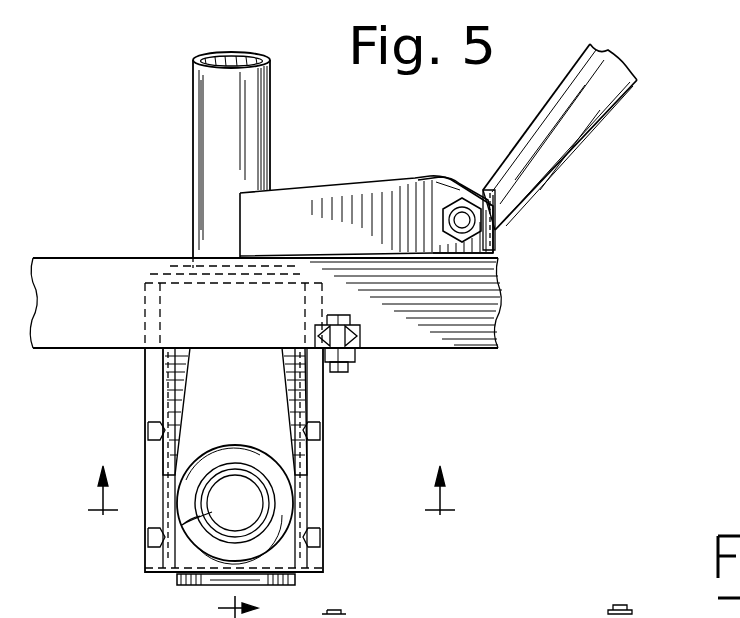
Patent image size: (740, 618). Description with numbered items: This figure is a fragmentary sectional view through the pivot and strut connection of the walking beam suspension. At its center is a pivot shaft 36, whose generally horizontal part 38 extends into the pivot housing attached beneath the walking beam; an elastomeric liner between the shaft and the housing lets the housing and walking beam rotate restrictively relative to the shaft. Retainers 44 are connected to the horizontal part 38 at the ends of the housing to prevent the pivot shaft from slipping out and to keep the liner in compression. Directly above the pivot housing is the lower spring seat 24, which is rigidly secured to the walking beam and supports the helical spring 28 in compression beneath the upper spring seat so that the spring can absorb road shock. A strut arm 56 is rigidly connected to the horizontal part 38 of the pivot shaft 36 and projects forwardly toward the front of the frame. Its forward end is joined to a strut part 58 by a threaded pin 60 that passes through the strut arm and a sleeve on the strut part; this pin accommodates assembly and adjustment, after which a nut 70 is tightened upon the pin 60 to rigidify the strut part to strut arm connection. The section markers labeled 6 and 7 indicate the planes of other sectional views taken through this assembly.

The lower spring seat 24 is at (300, 520).
The helical spring 28 is at (252, 455).
The pivot shaft 36 is at (189, 118).
The horizontal part 38 is at (200, 193).
The retainer 44 is at (210, 586).
The strut arm 56 is at (299, 193).
The strut part 58 is at (578, 142).
The threaded pin 60 is at (488, 190).
The nut 70 is at (445, 203).
The section line 6- 6 is at (271, 474).
The section line 7- 7 is at (245, 607).